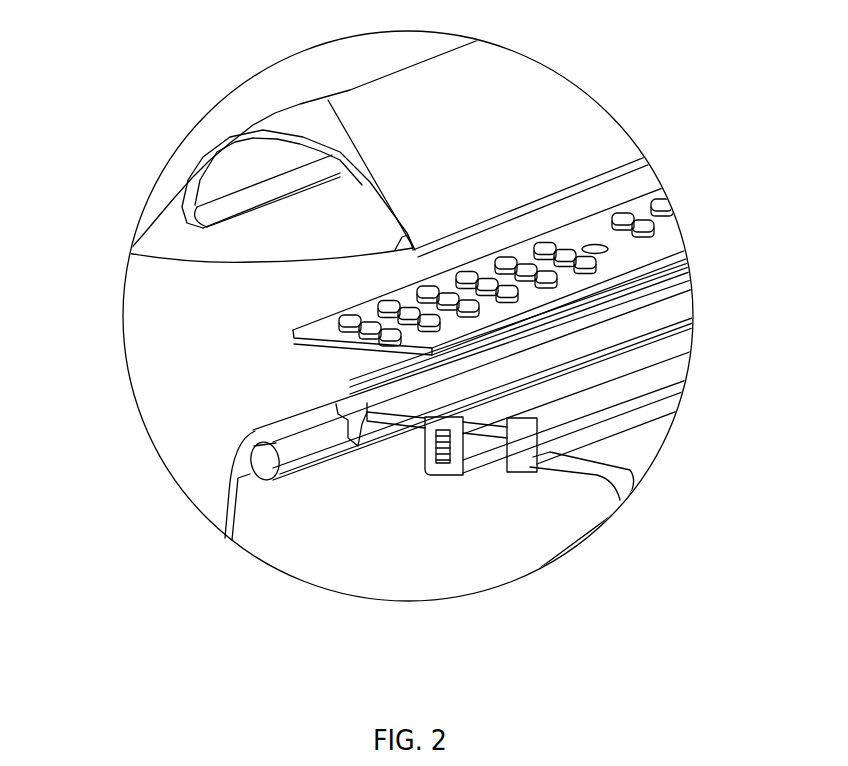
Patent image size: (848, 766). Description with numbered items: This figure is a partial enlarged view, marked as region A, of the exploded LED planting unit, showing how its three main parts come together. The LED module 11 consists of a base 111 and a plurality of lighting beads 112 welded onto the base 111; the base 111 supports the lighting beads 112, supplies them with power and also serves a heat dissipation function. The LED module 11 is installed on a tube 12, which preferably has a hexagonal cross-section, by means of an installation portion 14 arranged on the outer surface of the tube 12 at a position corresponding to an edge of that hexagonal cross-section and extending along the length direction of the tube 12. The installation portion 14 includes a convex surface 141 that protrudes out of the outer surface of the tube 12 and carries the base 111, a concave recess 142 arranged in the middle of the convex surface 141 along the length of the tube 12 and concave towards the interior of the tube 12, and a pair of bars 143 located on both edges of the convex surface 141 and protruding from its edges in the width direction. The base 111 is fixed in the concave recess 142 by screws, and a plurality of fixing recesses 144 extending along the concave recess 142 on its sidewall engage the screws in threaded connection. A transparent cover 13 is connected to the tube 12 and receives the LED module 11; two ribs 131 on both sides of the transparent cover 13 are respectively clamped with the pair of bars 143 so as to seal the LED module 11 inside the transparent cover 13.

The enlarged portion A is at (408, 314).
The LED module 11 is at (667, 243).
The base 111 is at (316, 322).
The lighting beads 112 is at (338, 330).
The tube 12 is at (227, 498).
The transparent cover 13 is at (290, 108).
The ribs 131 is at (196, 221).
The installation portion 14 is at (485, 550).
The convex surface 141 is at (487, 420).
The concave recess 142 is at (448, 474).
The bar 143 is at (540, 418).
The fixing recesses 144 is at (393, 543).